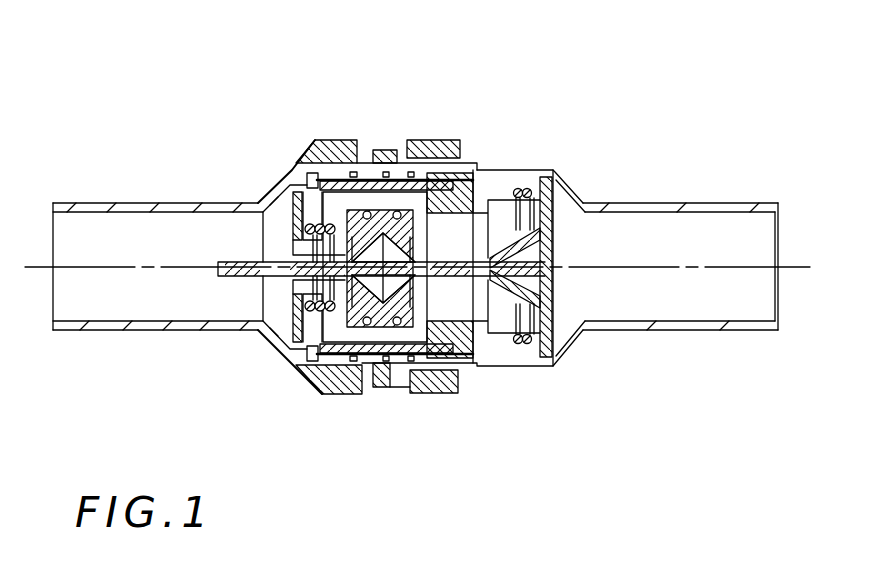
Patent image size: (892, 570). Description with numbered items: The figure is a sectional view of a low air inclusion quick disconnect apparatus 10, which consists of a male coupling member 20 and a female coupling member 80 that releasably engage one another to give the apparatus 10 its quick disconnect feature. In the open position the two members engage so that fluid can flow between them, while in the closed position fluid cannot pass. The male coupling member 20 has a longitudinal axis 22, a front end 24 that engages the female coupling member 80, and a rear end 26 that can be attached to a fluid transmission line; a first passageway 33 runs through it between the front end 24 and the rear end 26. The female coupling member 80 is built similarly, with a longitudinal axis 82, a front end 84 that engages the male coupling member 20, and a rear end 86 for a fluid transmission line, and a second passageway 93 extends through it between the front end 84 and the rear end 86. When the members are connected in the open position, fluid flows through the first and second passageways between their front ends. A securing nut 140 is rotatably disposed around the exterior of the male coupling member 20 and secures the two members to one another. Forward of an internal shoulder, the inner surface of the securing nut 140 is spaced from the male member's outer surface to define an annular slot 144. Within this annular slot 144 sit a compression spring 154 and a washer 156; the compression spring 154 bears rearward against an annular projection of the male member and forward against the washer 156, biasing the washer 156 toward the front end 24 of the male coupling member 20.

The low air inclusion quick disconnect apparatus 10 is at (417, 245).
The male coupling member 20 is at (146, 271).
The longitudinal axis 22 is at (113, 270).
The front end 24 is at (337, 401).
The rear end 26 is at (39, 331).
The first passageway 33 is at (131, 251).
The female coupling member 80 is at (692, 261).
The longitudinal axis 82 is at (703, 265).
The front end 84 is at (438, 399).
The rear end 86 is at (787, 332).
The second passageway 93 is at (656, 251).
The securing nut 140 is at (433, 121).
The annular slot 144 is at (312, 168).
The compression spring 154 is at (351, 172).
The washer 156 is at (368, 176).